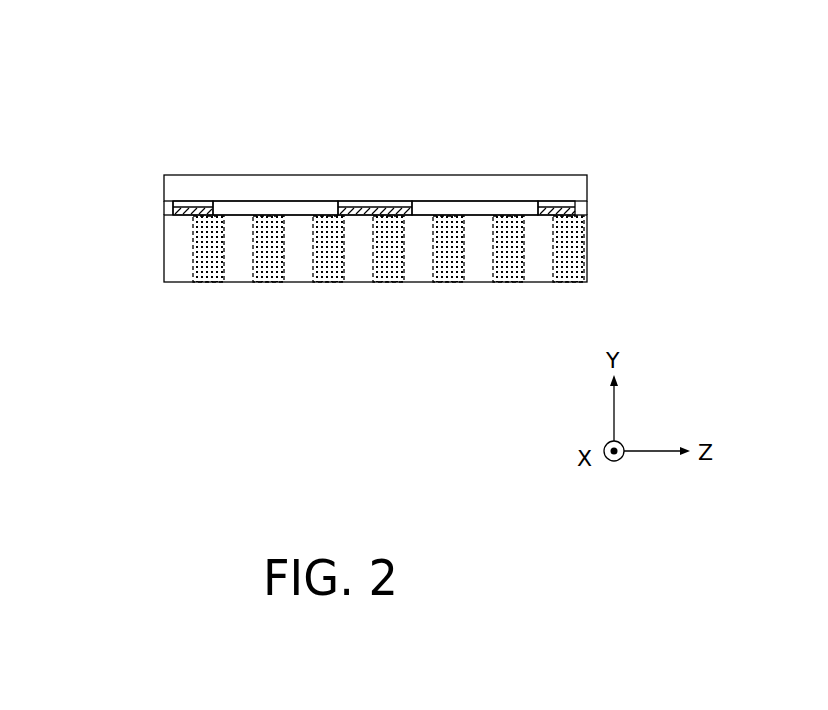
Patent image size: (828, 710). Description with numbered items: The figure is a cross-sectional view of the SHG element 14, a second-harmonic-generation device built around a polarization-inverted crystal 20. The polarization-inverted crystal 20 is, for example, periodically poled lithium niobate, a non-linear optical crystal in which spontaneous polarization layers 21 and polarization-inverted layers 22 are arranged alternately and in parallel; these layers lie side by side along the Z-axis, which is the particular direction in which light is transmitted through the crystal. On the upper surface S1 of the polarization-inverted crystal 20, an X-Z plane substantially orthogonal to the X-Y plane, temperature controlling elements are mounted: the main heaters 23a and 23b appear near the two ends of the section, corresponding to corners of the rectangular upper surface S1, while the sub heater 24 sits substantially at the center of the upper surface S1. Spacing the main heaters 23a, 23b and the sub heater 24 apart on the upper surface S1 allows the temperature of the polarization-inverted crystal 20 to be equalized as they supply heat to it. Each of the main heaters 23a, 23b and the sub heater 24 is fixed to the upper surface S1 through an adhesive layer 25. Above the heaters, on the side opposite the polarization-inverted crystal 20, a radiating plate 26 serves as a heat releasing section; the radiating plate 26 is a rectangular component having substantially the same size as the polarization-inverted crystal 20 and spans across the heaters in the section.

The SHG element 14 is at (207, 119).
The polarization-inverted crystal 20 is at (135, 257).
The spontaneous polarization layers 21 is at (241, 283).
The polarization-inverted layers 22 is at (203, 283).
The main heater 23a is at (185, 201).
The main heater 23b is at (567, 203).
The sub heater 24 is at (393, 201).
The adhesive layer 25 is at (570, 214).
The radiating plate 26 is at (540, 183).
The upper surface S1 is at (162, 210).